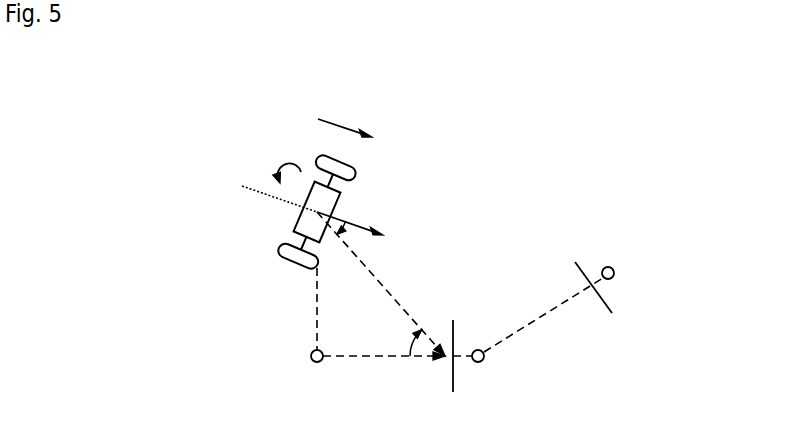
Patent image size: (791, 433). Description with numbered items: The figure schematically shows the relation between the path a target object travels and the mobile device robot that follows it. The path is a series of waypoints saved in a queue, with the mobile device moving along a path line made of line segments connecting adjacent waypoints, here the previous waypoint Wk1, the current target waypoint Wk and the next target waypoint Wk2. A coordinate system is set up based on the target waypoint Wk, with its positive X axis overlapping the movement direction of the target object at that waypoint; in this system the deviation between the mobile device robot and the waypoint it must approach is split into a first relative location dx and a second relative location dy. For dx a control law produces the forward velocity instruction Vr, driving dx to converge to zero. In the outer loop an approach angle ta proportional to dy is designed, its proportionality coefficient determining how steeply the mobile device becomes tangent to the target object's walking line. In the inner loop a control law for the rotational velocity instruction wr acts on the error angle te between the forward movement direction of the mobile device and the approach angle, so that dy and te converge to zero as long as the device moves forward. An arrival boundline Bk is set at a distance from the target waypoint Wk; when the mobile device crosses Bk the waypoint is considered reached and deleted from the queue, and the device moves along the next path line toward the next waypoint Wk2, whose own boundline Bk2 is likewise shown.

The mobile device robot is at (312, 212).
The forward velocity instruction Vr is at (336, 112).
The rotational velocity instruction wr is at (279, 157).
The error angle te is at (356, 240).
The approach angle ta is at (381, 284).
The second relative location deviation dy is at (305, 309).
The first relative location deviation dx is at (384, 370).
The previous waypoint Wk1 is at (283, 369).
The target waypoint Wk is at (528, 334).
The next target waypoint Wk2 is at (648, 258).
The arrival boundline Bk is at (466, 336).
The arrival boundline of next waypoint Bk2 is at (635, 301).